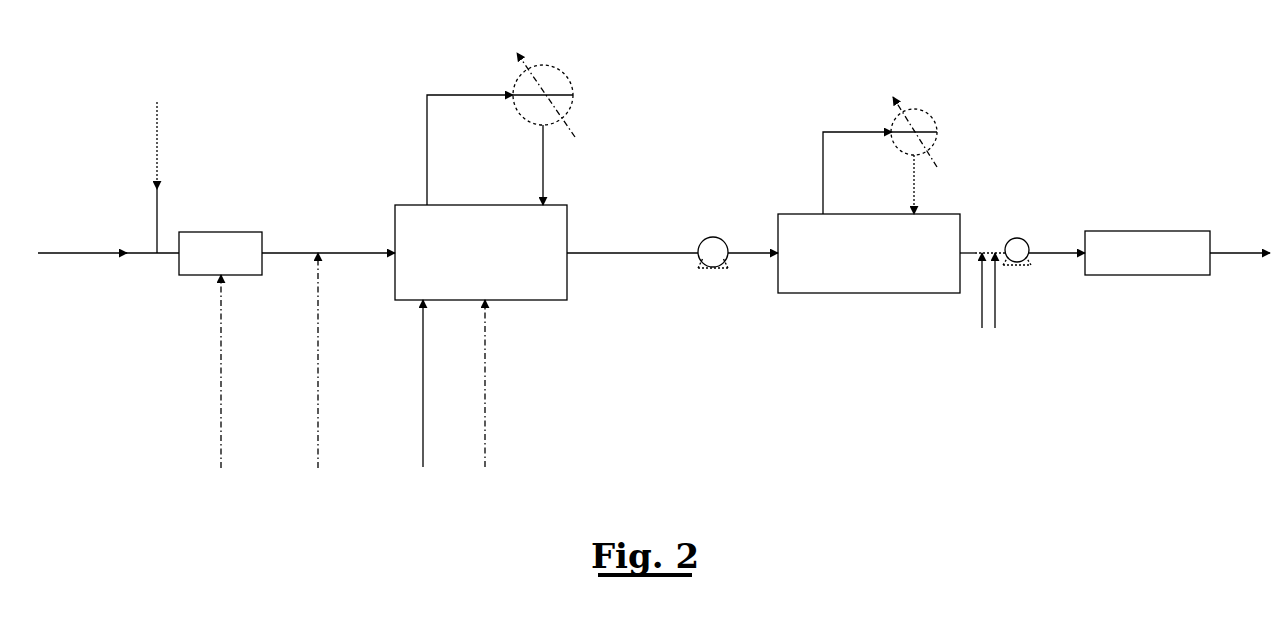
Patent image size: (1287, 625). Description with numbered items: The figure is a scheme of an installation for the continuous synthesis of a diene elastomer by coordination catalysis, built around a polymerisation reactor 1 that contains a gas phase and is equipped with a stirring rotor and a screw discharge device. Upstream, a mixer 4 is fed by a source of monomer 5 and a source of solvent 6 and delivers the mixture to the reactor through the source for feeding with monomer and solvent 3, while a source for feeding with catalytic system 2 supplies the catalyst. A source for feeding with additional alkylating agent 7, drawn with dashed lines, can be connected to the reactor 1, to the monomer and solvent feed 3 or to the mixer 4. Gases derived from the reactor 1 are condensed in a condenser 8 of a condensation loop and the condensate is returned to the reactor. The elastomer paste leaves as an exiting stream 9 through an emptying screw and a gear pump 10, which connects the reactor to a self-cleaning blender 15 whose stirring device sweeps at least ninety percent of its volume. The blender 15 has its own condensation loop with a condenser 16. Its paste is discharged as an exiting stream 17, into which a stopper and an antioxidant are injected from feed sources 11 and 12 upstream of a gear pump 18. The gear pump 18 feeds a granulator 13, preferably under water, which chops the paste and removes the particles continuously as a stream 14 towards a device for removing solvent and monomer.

The polymerisation reactor 1 is at (398, 205).
The source for feeding with catalytic system 2 is at (423, 412).
The source for feeding with monomer and solvent 3 is at (365, 253).
The mixer 4 is at (220, 232).
The source of monomer 5 is at (157, 145).
The source of solvent 6 is at (112, 253).
The source for feeding with additional alkylating agent 7 is at (221, 413).
The condenser 8 is at (515, 80).
The exiting stream 9 is at (592, 253).
The gear pump 10 is at (715, 237).
The feed source 11 is at (982, 280).
The feed source 12 is at (995, 280).
The granulator 13 is at (1135, 231).
The stream 14 is at (1238, 253).
The blender 15 is at (793, 213).
The condenser 16 is at (935, 118).
The exiting stream 17 is at (975, 253).
The gear pump 18 is at (1018, 238).